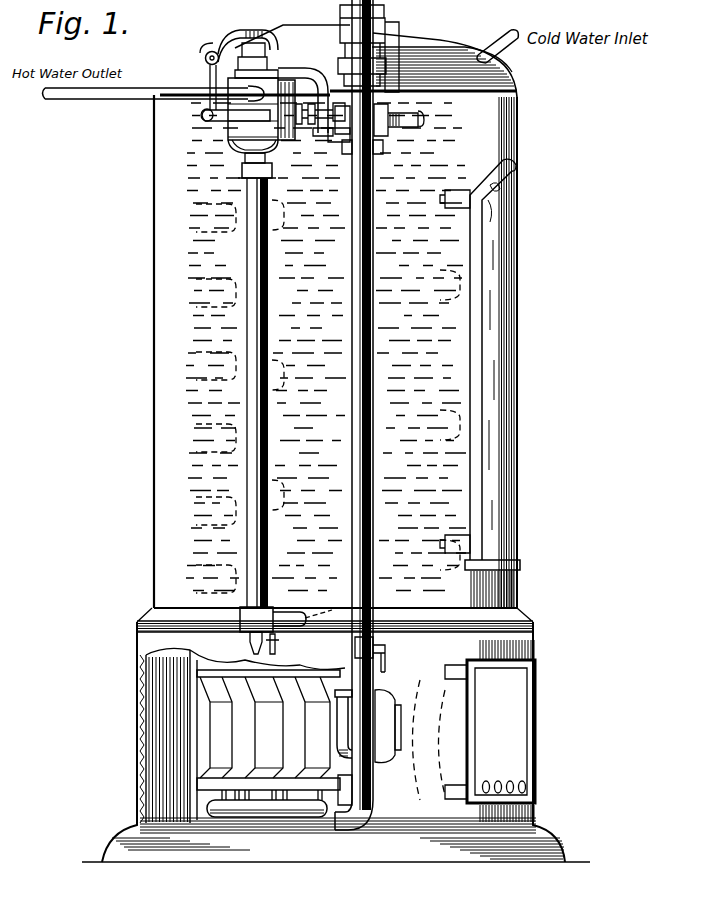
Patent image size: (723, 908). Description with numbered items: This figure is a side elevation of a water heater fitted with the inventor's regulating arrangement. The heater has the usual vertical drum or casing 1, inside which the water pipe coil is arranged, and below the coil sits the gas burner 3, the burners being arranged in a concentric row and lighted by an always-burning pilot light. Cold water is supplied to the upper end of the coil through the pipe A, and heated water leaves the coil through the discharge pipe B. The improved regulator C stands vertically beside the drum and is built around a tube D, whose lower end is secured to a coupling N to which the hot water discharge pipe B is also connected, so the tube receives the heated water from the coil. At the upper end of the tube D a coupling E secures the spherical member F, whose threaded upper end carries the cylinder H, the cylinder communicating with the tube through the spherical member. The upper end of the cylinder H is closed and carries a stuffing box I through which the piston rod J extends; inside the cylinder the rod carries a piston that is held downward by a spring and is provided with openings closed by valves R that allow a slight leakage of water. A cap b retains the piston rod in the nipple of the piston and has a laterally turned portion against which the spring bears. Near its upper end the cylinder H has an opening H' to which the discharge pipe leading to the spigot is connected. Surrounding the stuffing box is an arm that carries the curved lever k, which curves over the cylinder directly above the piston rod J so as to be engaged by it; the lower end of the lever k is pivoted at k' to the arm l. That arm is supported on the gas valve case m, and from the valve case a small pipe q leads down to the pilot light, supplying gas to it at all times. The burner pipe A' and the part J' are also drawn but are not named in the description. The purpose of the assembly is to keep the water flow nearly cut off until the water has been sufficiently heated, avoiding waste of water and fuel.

The vertical drum or casing 1 is at (171, 371).
The gas burner 3 is at (236, 744).
The cold water supply pipe A is at (495, 39).
The burner gas supply pipe A' is at (380, 705).
The hot water discharge pipe B is at (307, 626).
The regulator C is at (230, 150).
The tube D is at (258, 239).
The coupling E is at (255, 182).
The spherical member F is at (236, 150).
The cylinder H is at (157, 115).
The opening H' is at (305, 95).
The stuffing box I is at (270, 60).
The piston rod J is at (198, 50).
The pivot link J' is at (208, 33).
The curved lever k is at (248, 31).
The pivot k' is at (156, 118).
The arm l is at (208, 88).
The cap b is at (315, 124).
The gas valve case m is at (338, 136).
The small pipe q is at (362, 48).
The coupling N is at (240, 613).
The valves R is at (455, 503).